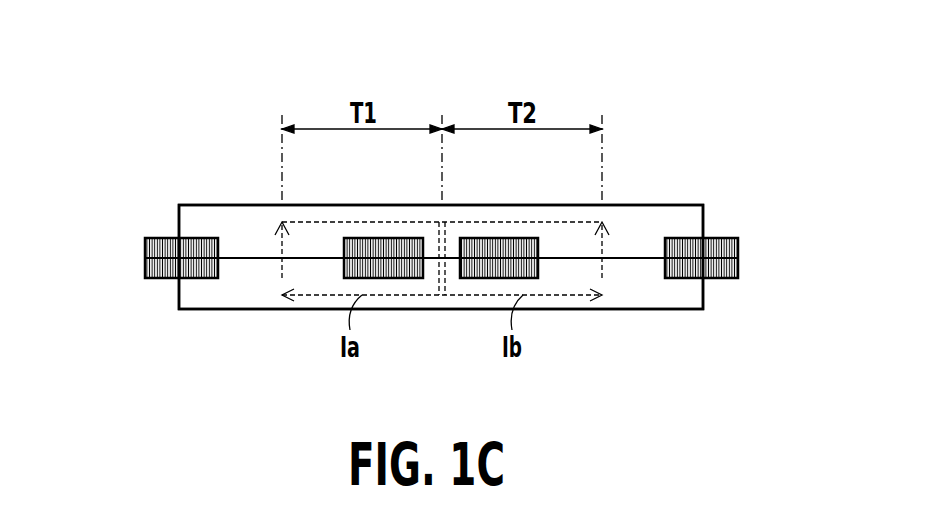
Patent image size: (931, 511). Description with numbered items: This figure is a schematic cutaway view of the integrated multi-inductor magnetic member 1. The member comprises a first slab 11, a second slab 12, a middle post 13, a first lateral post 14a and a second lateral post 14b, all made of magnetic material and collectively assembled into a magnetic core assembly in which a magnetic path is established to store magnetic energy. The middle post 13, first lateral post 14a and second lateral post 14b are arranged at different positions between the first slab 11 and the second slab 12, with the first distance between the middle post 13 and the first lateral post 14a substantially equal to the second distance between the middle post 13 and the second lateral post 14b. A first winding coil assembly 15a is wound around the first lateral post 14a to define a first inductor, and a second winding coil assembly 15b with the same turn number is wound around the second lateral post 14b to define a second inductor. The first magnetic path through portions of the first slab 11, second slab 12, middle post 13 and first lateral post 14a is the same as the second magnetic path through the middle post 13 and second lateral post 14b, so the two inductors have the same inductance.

The integrated multi-inductor magnetic member 1 is at (815, 45).
The first slab 11 is at (223, 218).
The second slab 12 is at (205, 294).
The middle post 13 is at (428, 247).
The first lateral post 14a is at (254, 267).
The second lateral post 14b is at (627, 267).
The first winding coil assembly 15a is at (155, 249).
The second winding coil assembly 15b is at (728, 248).